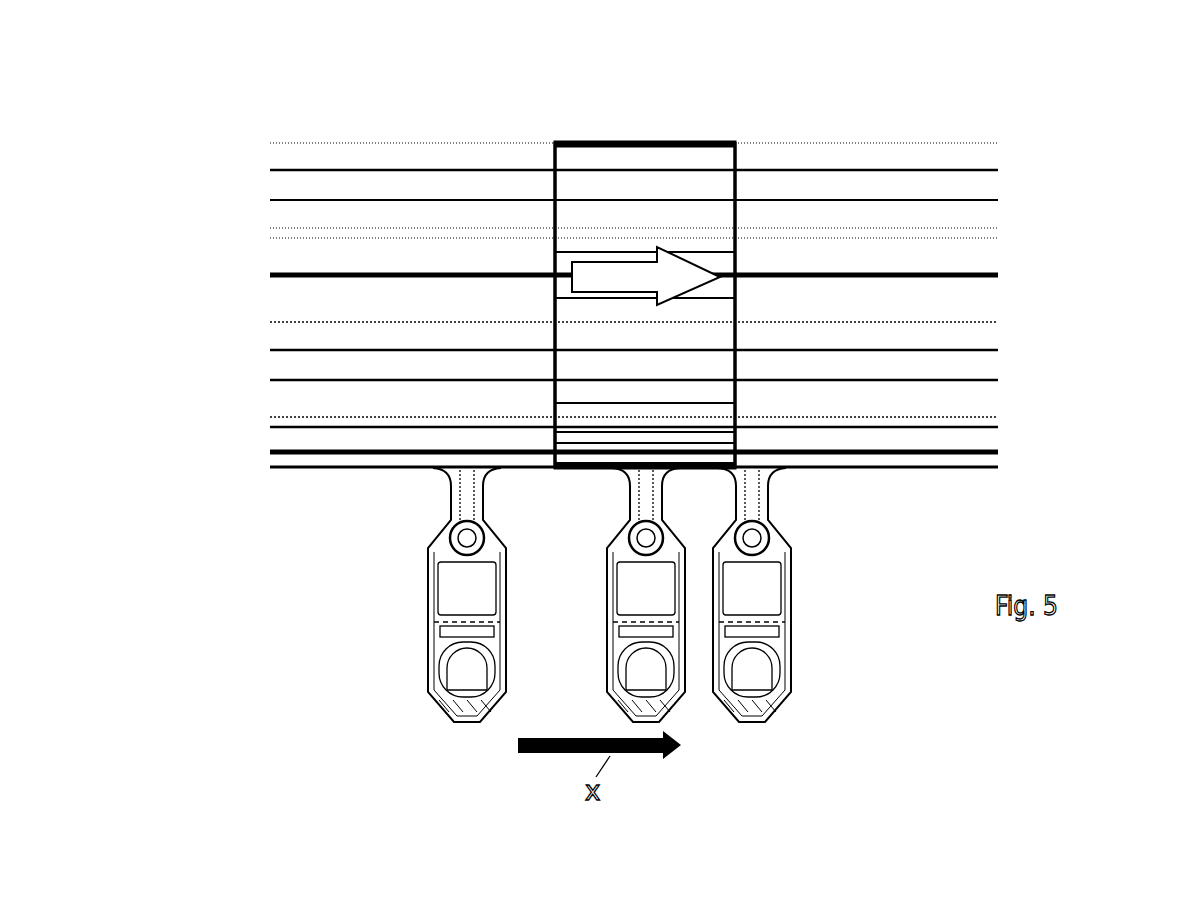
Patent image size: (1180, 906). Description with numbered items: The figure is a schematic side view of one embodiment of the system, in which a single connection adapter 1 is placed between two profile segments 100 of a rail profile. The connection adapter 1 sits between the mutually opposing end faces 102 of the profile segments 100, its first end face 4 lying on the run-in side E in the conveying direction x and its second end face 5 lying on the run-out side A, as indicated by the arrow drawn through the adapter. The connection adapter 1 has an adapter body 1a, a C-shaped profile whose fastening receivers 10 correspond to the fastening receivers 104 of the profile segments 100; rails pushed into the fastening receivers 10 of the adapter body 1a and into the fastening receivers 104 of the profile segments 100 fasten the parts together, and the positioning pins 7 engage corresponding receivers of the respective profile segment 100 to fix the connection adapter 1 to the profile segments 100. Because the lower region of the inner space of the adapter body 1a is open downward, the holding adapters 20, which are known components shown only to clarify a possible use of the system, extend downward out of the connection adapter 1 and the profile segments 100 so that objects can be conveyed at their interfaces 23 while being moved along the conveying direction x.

The connection adapter 1 is at (654, 130).
The adapter body 1a is at (683, 158).
The first end face 4 is at (556, 136).
The second end face 5 is at (736, 136).
The positioning pins 7 is at (520, 420).
The fastening receivers 10 is at (629, 363).
The holding adapters 20 is at (453, 556).
The interfaces 23 is at (432, 686).
The profile segments 100 is at (303, 293).
The end faces 102 is at (551, 262).
The fastening receivers 104 is at (315, 188).